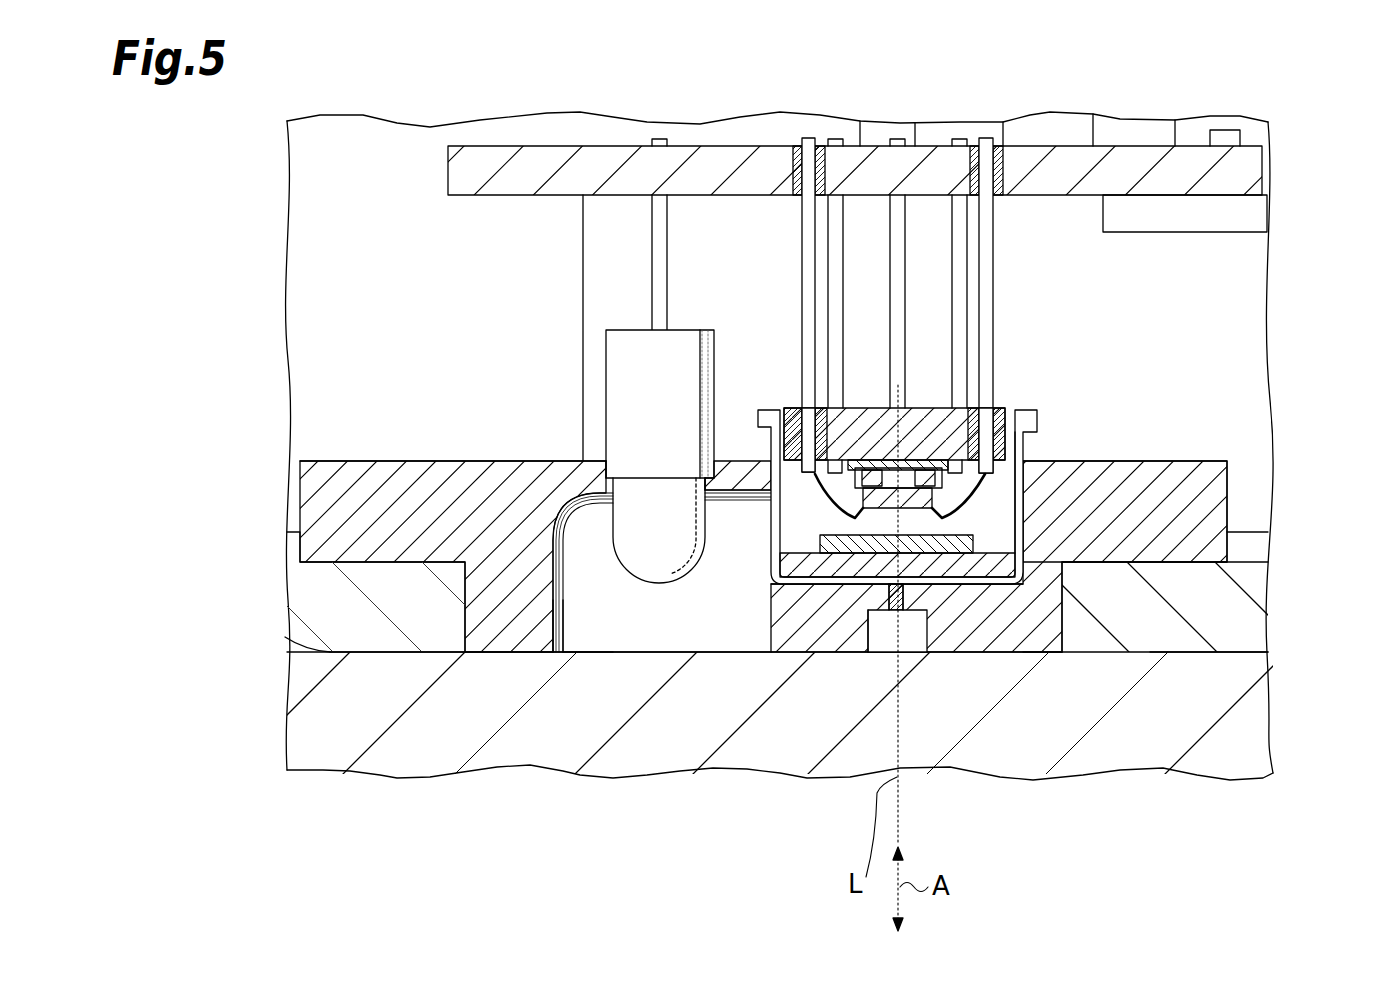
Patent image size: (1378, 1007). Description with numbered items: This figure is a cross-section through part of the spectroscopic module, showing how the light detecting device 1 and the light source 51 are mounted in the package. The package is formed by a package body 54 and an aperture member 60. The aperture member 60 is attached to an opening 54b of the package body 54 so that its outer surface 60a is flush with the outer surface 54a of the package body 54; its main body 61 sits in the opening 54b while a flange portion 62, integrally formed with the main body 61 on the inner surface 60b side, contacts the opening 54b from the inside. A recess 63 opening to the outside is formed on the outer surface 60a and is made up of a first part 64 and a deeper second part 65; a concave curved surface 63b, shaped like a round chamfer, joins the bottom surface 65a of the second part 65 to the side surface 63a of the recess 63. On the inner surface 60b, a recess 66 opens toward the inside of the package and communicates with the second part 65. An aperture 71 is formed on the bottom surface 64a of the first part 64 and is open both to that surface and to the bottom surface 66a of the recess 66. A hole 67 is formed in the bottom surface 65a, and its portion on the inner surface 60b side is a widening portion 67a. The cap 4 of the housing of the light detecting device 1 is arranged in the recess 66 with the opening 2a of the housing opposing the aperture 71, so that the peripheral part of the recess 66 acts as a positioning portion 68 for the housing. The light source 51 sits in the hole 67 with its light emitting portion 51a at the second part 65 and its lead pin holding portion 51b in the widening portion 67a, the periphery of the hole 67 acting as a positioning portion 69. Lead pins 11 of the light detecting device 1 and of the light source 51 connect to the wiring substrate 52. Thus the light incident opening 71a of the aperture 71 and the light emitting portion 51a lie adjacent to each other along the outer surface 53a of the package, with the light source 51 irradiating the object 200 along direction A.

The light detecting device 1 is at (807, 592).
The opening of the housing 2a is at (882, 590).
The cap 4 is at (1033, 477).
The lead pins 11 is at (838, 298).
The light source 51 is at (663, 590).
The light emitting portion 51a is at (686, 603).
The lead pin holding portion 51b is at (622, 377).
The wiring substrate 52 is at (1190, 165).
The outer surface of the package 53a is at (1195, 655).
The package body 54 is at (308, 595).
The outer surface of the package body 54a is at (387, 657).
The opening of the package body 54b is at (1050, 640).
The aperture member 60 is at (1007, 640).
The outer surface of the aperture member 60a is at (502, 657).
The inner surface of the aperture member 60b is at (462, 460).
The main body 61 is at (1048, 608).
The flange portion 62 is at (1210, 502).
The recess 63 is at (767, 636).
The side surface of the recess 63a is at (605, 657).
The concave curved surface 63b is at (570, 503).
The first part 64 is at (913, 617).
The bottom surface of the first part 64a is at (873, 590).
The second part 65 is at (573, 657).
The bottom surface of the second part 65a is at (737, 502).
The recess 66 is at (1033, 503).
The bottom surface of the recess 66a is at (1012, 500).
The hole 67 is at (690, 477).
The widening portion 67a is at (613, 487).
The positioning portion 68 is at (1047, 507).
The positioning portion 69 is at (712, 467).
The aperture 71 is at (887, 593).
The light incident opening 71a is at (903, 593).
The object 200 is at (310, 718).